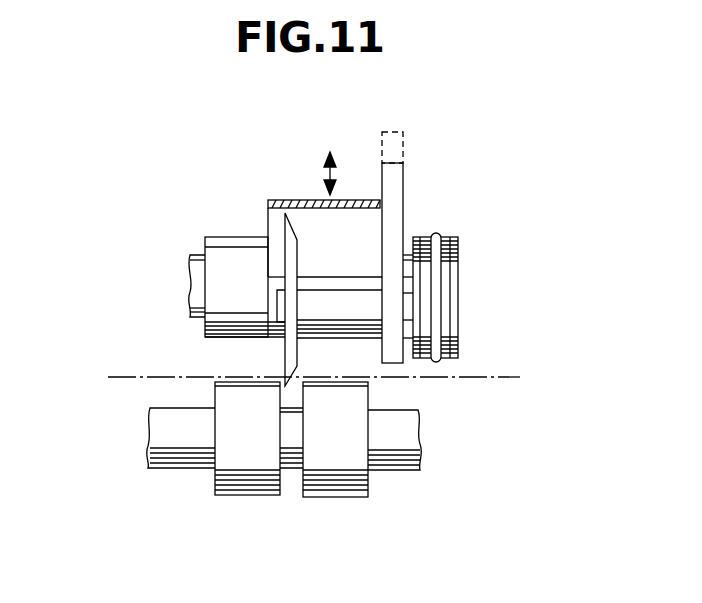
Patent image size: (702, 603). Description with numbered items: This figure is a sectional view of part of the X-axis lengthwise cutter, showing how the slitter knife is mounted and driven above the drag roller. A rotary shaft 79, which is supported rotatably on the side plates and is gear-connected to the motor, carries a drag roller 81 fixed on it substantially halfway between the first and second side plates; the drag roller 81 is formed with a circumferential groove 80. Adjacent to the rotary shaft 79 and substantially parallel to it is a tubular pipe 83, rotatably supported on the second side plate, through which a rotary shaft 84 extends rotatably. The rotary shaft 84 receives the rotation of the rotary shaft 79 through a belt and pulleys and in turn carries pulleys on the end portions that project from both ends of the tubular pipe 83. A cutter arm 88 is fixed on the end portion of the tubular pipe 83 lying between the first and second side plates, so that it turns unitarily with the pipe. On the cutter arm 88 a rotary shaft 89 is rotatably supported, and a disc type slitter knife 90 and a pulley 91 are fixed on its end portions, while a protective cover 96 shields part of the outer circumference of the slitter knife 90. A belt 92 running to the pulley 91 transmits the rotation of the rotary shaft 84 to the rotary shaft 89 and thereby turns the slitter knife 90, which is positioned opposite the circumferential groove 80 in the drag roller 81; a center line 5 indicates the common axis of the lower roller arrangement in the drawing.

The center line / axis 5 is at (436, 378).
The rotary shaft 79 is at (402, 460).
The circumferential groove 80 is at (283, 488).
The drag roller 81 is at (343, 483).
The tubular pipe 83 is at (233, 240).
The rotary shaft 84 is at (196, 257).
The cutter arm 88 is at (396, 186).
The rotary shaft 89 is at (372, 316).
The disc type slitter knife 90 is at (290, 352).
The pulley 91 is at (450, 302).
The belt 92 is at (437, 275).
The protective cover 96 is at (300, 200).